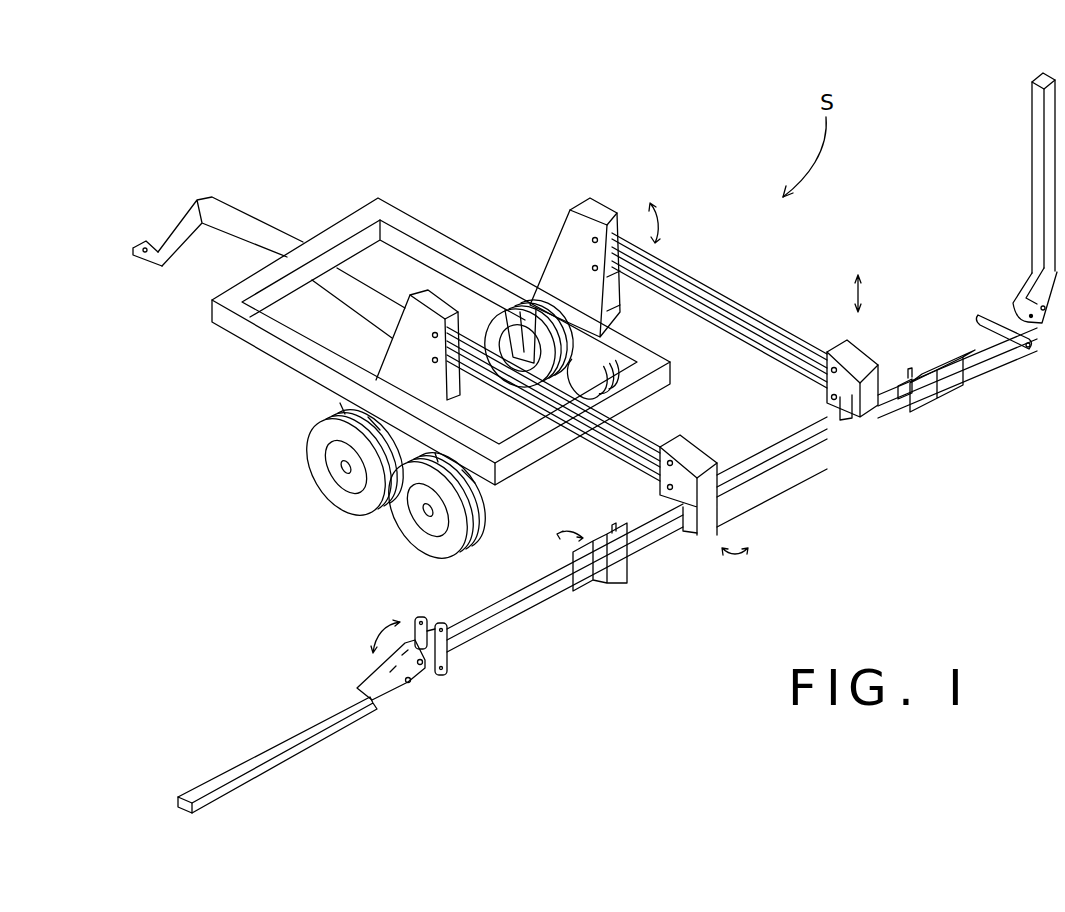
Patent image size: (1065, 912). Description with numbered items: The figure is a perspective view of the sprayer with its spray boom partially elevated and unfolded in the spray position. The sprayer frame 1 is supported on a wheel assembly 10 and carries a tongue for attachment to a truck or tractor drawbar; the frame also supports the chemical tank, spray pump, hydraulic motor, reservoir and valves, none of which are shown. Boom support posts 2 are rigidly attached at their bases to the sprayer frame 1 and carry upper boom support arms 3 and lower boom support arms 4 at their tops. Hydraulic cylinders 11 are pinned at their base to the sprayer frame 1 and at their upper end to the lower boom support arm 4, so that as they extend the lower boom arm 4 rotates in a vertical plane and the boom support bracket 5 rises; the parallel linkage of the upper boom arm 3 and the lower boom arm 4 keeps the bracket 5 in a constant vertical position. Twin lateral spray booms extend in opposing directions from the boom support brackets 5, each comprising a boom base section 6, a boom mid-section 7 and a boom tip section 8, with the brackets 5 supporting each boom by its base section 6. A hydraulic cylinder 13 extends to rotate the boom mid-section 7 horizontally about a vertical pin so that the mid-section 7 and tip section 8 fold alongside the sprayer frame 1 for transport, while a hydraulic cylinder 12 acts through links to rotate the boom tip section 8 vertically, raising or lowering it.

The sprayer frame 1 is at (463, 230).
The boom support post 2 is at (580, 288).
The upper boom support arm 3 is at (663, 425).
The lower boom support arm 4 is at (634, 480).
The boom support bracket 5 is at (886, 364).
The boom base section 6 is at (779, 443).
The boom mid-section 7 is at (512, 632).
The boom tip section 8 is at (292, 753).
The wheel assembly 10 is at (327, 497).
The hydraulic cylinder 11 is at (488, 403).
The hydraulic cylinder 12 is at (476, 623).
The hydraulic cylinder 13 is at (658, 557).